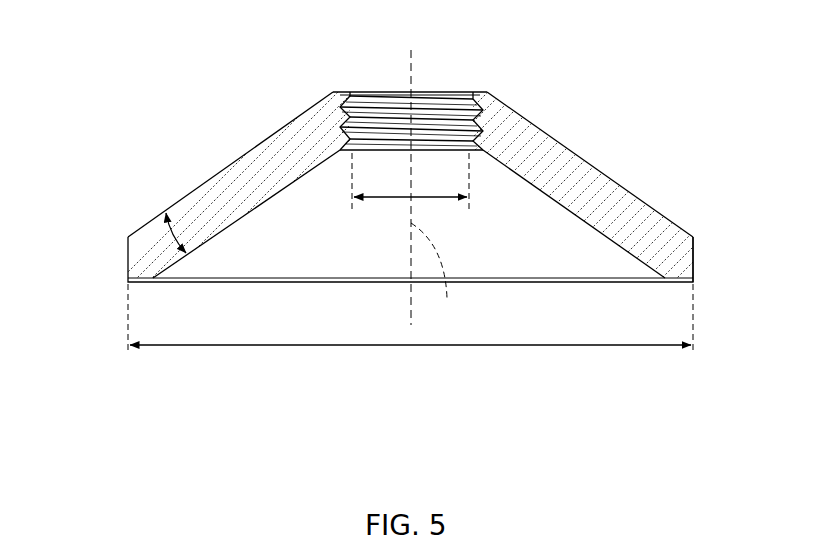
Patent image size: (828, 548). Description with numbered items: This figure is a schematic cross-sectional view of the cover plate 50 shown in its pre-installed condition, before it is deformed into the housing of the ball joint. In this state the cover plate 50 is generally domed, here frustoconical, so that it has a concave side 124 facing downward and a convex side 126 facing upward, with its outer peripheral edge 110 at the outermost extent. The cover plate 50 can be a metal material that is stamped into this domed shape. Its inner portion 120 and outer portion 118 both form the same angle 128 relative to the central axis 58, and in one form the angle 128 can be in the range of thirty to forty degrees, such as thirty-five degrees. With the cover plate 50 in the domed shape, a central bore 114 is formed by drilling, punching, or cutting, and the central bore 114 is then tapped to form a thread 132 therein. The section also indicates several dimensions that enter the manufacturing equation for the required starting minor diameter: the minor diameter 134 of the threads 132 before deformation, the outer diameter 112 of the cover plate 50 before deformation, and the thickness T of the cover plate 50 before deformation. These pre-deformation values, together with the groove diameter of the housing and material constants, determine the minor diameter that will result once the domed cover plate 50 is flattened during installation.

The outer peripheral edge 110 is at (128, 250).
The outer diameter 112 is at (425, 346).
The central bore 114 is at (377, 98).
The outer portion 118 is at (666, 212).
The inner portion 120 is at (523, 114).
The concave side 124 is at (594, 232).
The convex side 126 is at (240, 154).
The angle 128 is at (247, 218).
The thread 132 is at (457, 117).
The minor diameter 134 is at (453, 199).
The central axis 58 is at (436, 187).
The cover plate 50 is at (164, 213).
The thickness T is at (177, 233).